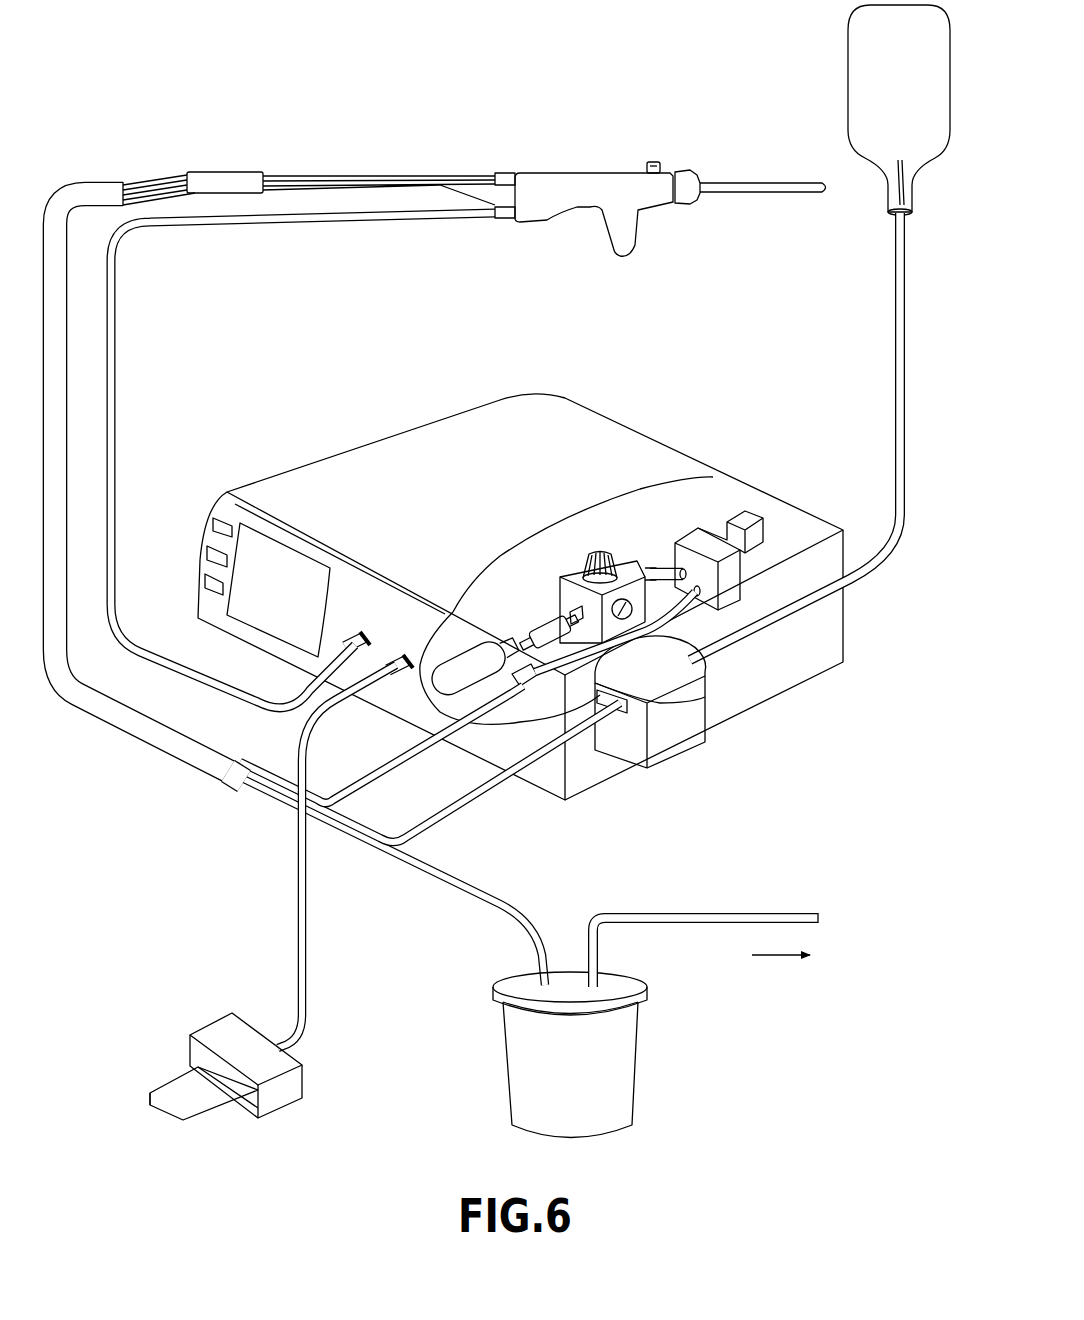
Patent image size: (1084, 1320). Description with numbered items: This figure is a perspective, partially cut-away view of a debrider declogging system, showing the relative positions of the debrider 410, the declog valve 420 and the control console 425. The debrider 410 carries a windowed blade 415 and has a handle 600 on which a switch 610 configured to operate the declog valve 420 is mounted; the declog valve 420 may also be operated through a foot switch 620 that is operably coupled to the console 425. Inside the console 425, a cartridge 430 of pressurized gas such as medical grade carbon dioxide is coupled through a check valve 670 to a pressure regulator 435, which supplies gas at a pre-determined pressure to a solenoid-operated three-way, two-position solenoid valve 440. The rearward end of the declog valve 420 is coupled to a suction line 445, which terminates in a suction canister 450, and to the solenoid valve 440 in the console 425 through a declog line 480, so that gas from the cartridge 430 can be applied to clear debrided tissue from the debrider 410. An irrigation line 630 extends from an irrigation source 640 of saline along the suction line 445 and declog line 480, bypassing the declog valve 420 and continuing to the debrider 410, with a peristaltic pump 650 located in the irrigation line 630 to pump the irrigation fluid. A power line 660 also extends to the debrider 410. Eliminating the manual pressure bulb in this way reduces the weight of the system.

The debrider 410 is at (537, 228).
The blade 415 is at (762, 203).
The declog valve 420 is at (225, 158).
The control console 425 is at (802, 672).
The cartridge 430 is at (490, 638).
The pressure regulator 435 is at (598, 548).
The solenoid valve 440 is at (713, 530).
The suction line 445 is at (500, 910).
The suction canister 450 is at (614, 1074).
The declog line 480 is at (358, 772).
The handle 600 is at (597, 198).
The switch 610 is at (652, 160).
The foot switch 620 is at (217, 1026).
The irrigation line 630 is at (482, 810).
The irrigation source 640 is at (848, 66).
The peristaltic pump 650 is at (682, 742).
The power line 660 is at (122, 327).
The check valve 670 is at (550, 618).